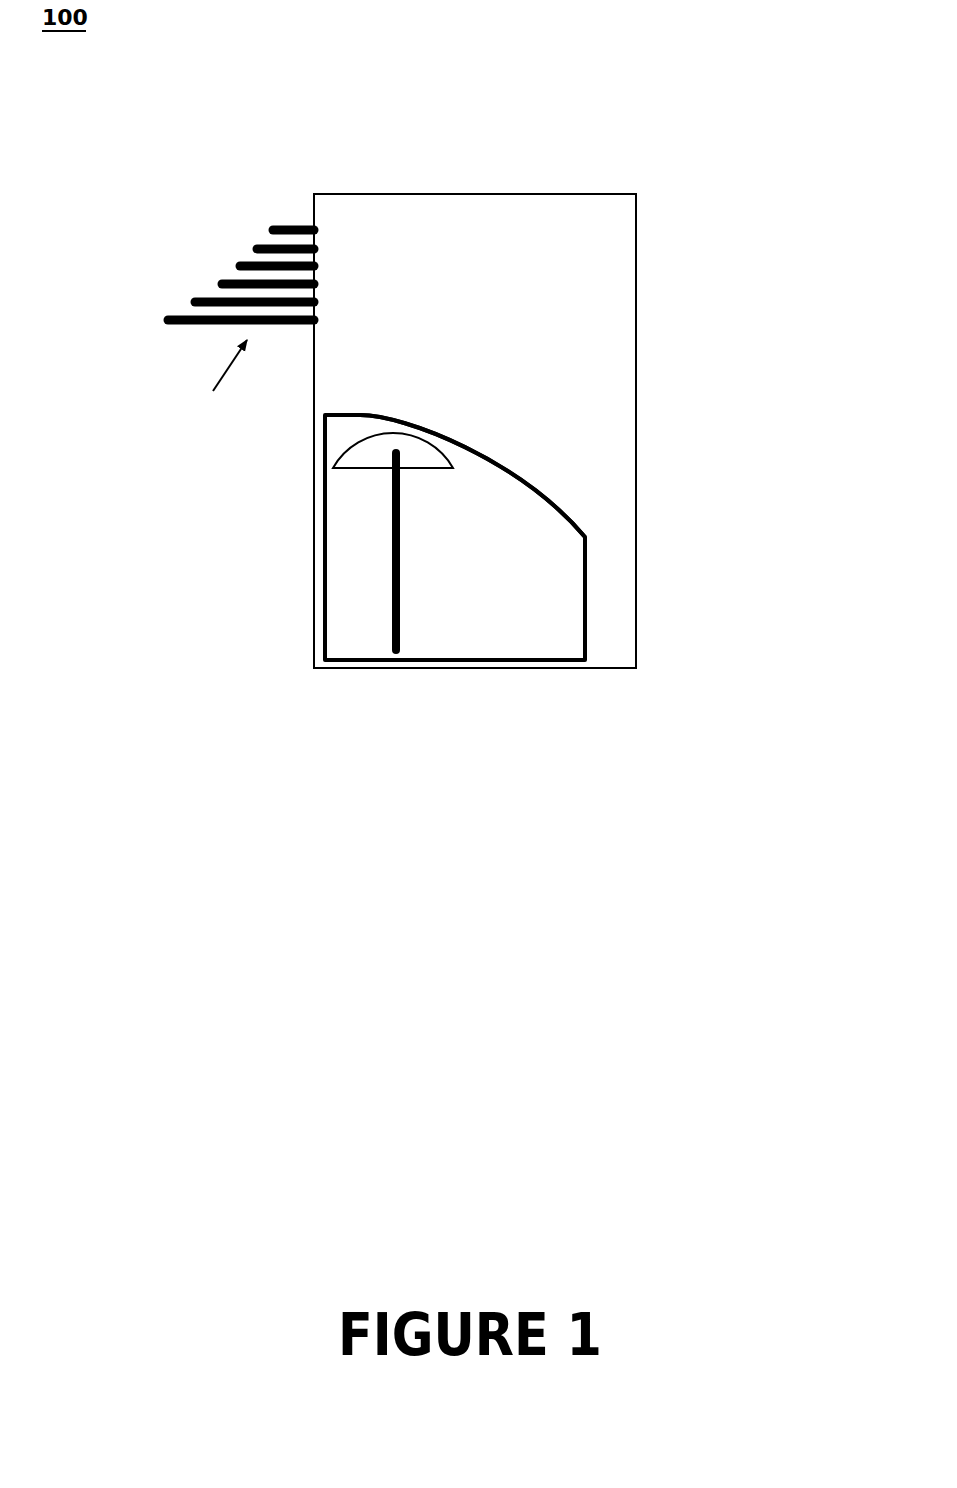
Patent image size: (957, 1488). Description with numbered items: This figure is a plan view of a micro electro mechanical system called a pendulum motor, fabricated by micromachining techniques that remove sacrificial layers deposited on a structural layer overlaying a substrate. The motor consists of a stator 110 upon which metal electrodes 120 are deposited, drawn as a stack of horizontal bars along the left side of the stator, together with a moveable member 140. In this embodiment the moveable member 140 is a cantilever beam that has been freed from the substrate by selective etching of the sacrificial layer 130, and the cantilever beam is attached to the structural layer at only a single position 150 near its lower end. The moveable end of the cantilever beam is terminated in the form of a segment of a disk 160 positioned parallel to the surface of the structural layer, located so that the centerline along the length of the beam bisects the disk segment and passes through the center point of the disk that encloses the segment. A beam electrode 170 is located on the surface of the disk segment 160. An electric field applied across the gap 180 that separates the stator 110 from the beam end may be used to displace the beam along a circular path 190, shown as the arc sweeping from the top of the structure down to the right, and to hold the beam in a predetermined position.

The stator 110 is at (637, 368).
The metal electrodes 120 is at (392, 391).
The sacrificial layer 130 is at (570, 663).
The moveable member 140 is at (390, 603).
The single position 150 is at (407, 654).
The segment of a disk 160 is at (347, 440).
The beam electrode 170 is at (329, 470).
The gap 180 is at (374, 429).
The circular path 190 is at (519, 474).